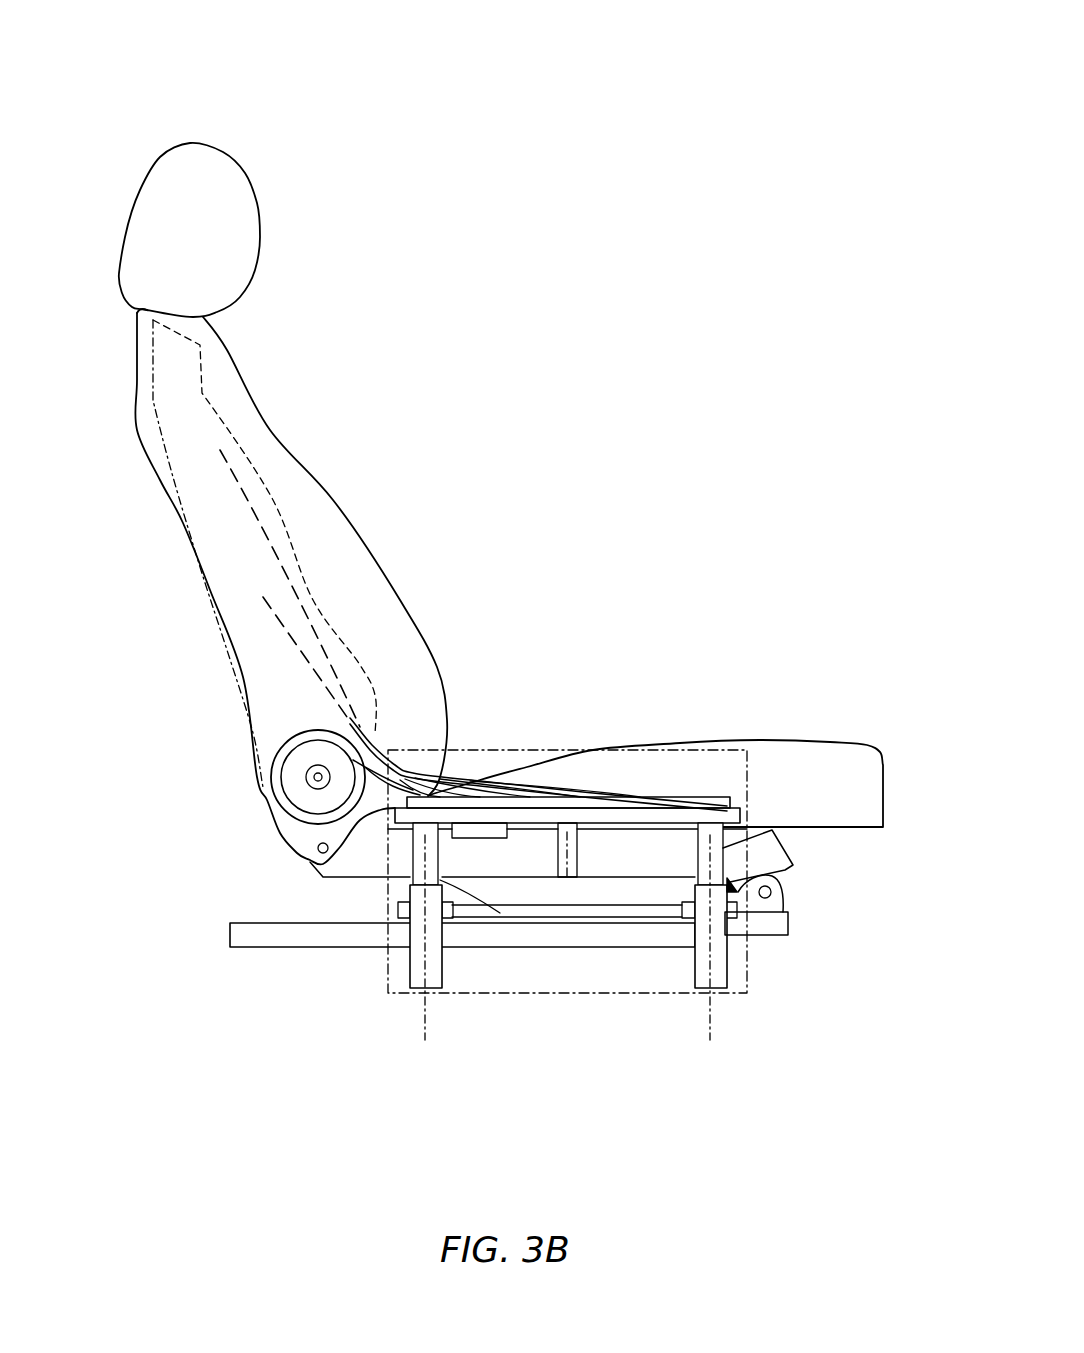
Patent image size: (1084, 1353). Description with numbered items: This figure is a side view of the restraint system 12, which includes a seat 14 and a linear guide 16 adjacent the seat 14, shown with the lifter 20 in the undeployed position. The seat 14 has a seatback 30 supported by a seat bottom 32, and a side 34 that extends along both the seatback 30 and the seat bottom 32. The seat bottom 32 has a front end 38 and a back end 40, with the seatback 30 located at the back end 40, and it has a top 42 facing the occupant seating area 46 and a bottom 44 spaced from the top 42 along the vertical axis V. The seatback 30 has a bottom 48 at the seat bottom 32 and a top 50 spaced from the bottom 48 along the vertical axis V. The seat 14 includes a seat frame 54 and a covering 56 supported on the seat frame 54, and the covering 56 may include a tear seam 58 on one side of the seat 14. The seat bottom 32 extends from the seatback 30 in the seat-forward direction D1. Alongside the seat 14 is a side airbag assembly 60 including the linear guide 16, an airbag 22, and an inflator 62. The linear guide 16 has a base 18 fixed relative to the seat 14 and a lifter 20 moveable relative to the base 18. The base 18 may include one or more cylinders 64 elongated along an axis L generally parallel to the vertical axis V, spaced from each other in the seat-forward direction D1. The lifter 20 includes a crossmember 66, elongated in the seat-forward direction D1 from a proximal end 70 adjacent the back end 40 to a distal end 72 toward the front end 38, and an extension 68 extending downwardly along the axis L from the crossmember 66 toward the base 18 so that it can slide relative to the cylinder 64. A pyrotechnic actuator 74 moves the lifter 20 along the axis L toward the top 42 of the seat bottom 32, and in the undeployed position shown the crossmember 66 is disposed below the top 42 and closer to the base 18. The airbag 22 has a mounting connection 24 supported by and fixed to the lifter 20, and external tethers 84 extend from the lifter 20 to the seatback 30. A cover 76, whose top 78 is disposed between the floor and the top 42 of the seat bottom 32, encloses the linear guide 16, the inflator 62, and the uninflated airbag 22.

The restraint system 12 is at (400, 381).
The seat 14 is at (224, 342).
The linear guide 16 is at (677, 768).
The base 18 is at (404, 966).
The lifter 20 is at (545, 832).
The airbag 22 is at (718, 794).
The mounting connection 24 is at (365, 758).
The seatback 30 is at (134, 384).
The seat bottom 32 is at (884, 746).
The outboard side 34 is at (190, 380).
The front end 38 is at (885, 781).
The back end 40 is at (509, 764).
The top 42 is at (837, 742).
The bottom 44 is at (857, 829).
The occupant seating area 46 is at (620, 421).
The bottom 48 is at (445, 718).
The top 50 is at (140, 307).
The seat frame 54 is at (204, 392).
The covering 56 is at (420, 702).
The tear seam 58 is at (263, 533).
The side airbag assembly 60 is at (527, 1014).
The inflator 62 is at (476, 837).
The cylinder 64 is at (443, 968).
The crossmember 66 is at (638, 818).
The extension 68 is at (410, 857).
The proximal end 70 is at (388, 812).
The distal end 72 is at (743, 815).
The pyrotechnic actuator 74 is at (577, 862).
The cover 76 is at (752, 946).
The top 78 is at (537, 748).
The external tethers 84 is at (590, 792).
The vertical axis V is at (208, 140).
The axis L is at (566, 1055).
The seat-forward direction D1 is at (572, 1142).